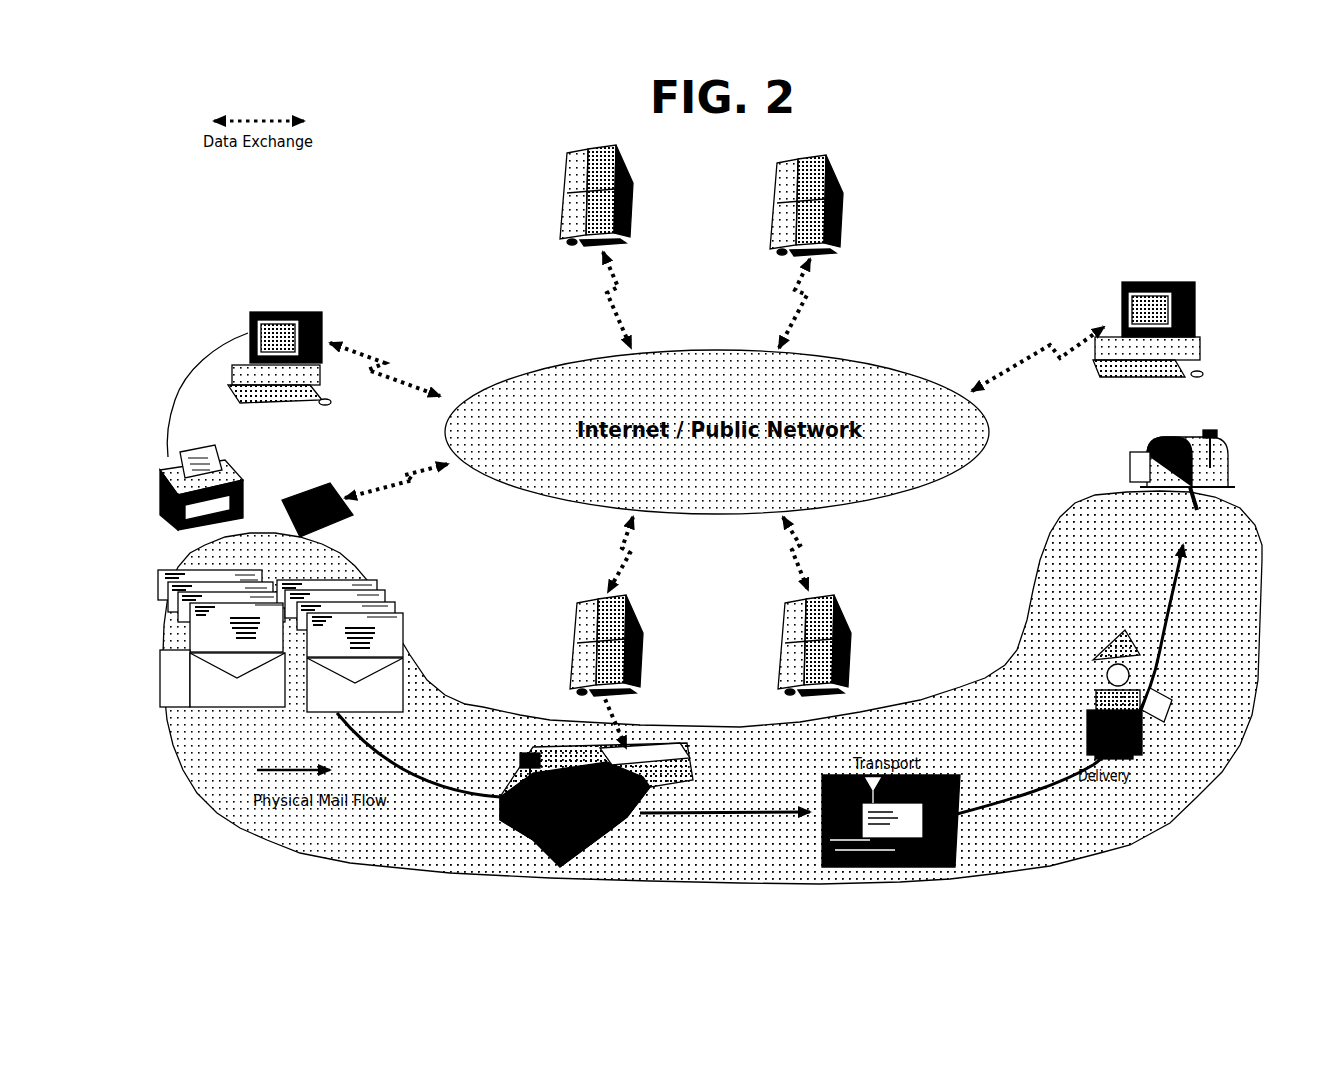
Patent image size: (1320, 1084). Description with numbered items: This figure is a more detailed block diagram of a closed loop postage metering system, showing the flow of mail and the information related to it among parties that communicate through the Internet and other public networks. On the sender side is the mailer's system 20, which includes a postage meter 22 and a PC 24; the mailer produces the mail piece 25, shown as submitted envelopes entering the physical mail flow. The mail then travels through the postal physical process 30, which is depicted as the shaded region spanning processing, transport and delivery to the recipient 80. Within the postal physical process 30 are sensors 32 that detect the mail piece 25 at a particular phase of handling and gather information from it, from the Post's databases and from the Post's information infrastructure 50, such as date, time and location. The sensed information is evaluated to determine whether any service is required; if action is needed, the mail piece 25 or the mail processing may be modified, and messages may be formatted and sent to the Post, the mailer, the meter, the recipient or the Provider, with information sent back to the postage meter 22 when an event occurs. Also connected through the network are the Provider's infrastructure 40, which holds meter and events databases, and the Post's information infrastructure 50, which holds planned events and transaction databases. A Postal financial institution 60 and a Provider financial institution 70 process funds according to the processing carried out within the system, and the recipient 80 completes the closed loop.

The mailer's system 20 is at (168, 372).
The postage meter 22 is at (302, 487).
The PC 24 is at (313, 330).
The mail piece 25 is at (393, 635).
The postal physical process 30 is at (760, 727).
The sensors 32 is at (580, 770).
The Provider's infrastructure 40 is at (635, 198).
The Post's information infrastructure 50 is at (637, 643).
The Postal financial institution 60 is at (842, 615).
The Provider financial institution 70 is at (840, 223).
The recipient 80 is at (1123, 302).